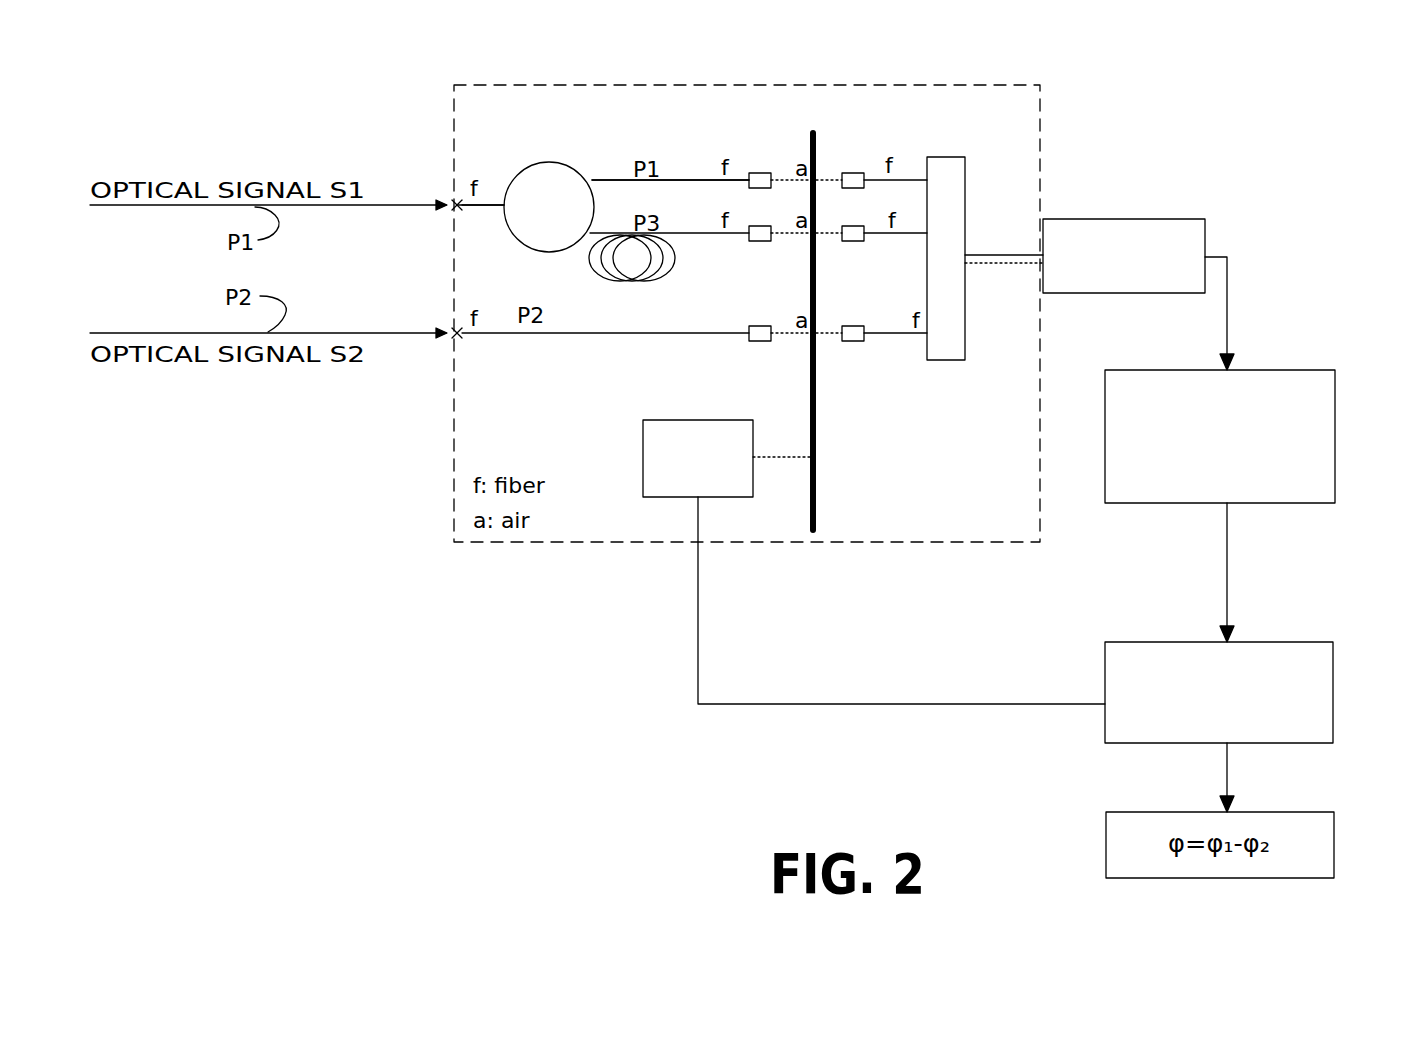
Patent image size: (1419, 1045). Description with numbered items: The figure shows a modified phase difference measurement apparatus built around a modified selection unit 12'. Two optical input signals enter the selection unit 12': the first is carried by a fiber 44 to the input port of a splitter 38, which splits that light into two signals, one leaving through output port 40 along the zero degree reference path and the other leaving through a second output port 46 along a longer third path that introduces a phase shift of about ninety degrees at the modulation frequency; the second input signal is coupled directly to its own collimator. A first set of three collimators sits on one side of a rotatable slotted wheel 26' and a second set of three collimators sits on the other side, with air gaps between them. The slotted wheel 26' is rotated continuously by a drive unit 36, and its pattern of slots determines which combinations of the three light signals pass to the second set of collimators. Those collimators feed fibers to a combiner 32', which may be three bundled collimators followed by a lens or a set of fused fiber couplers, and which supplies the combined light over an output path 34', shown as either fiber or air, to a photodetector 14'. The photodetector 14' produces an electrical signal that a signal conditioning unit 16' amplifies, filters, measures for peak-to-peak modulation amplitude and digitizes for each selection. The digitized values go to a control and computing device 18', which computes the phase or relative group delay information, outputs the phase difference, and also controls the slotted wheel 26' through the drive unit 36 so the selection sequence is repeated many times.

The modified selection unit 12' is at (747, 280).
The photodetector 14' is at (1138, 294).
The signal conditioning unit 16' is at (1253, 506).
The computing device 18' is at (1258, 727).
The rotatable slotted wheel 26' is at (842, 333).
The combiner 32' is at (968, 262).
The combiner output path 34' is at (1004, 230).
The drive unit 36 is at (643, 440).
The splitter 38 is at (523, 170).
The output port 40 is at (596, 179).
The fiber 44 is at (481, 207).
The second output port 46 is at (588, 233).